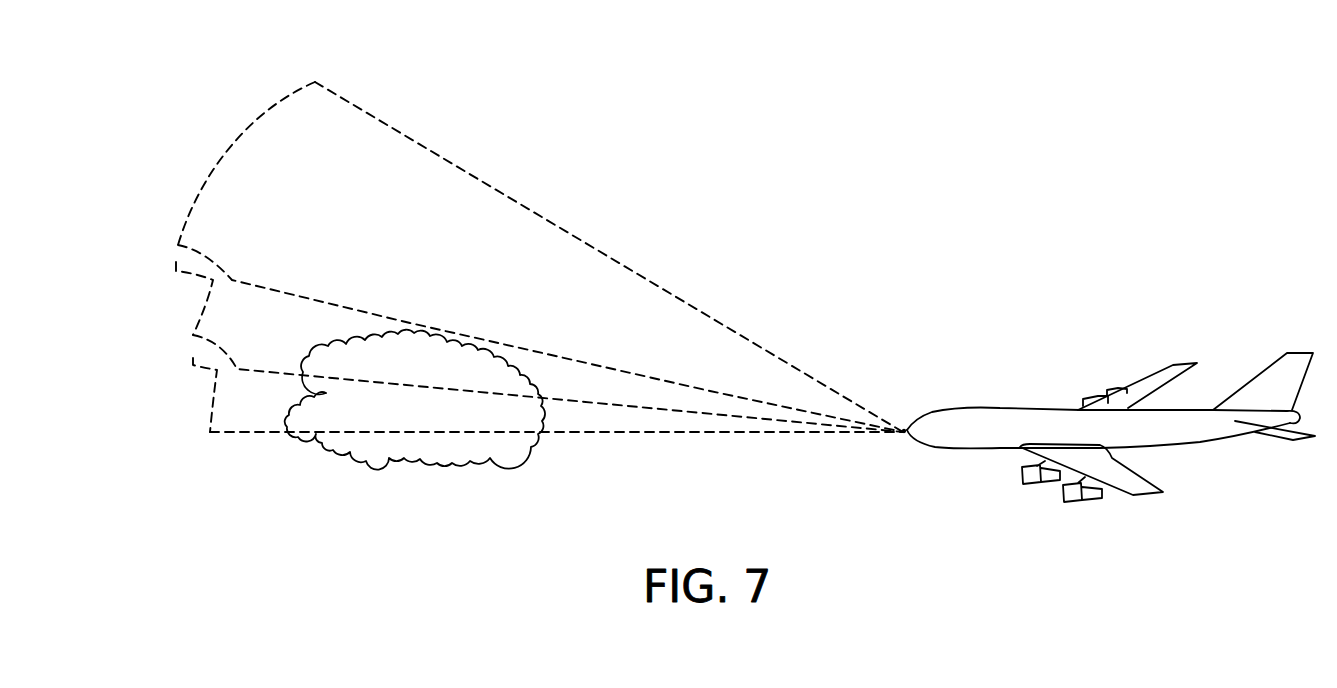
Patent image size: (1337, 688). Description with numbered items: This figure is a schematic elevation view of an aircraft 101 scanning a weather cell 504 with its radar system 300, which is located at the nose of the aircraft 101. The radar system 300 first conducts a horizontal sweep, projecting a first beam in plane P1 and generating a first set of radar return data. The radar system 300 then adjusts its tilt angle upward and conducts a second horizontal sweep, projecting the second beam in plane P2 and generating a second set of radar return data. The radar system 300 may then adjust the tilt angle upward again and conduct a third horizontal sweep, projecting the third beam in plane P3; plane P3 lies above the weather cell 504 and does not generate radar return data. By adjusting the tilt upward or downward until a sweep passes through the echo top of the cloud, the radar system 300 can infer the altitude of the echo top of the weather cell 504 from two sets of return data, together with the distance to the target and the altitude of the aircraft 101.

The aircraft 101 is at (1063, 425).
The radar system 300 is at (905, 430).
The weather cell 504 is at (510, 325).
The plane of first beam P1 is at (252, 434).
The plane of second beam P2 is at (177, 335).
The plane of third beam P3 is at (171, 245).